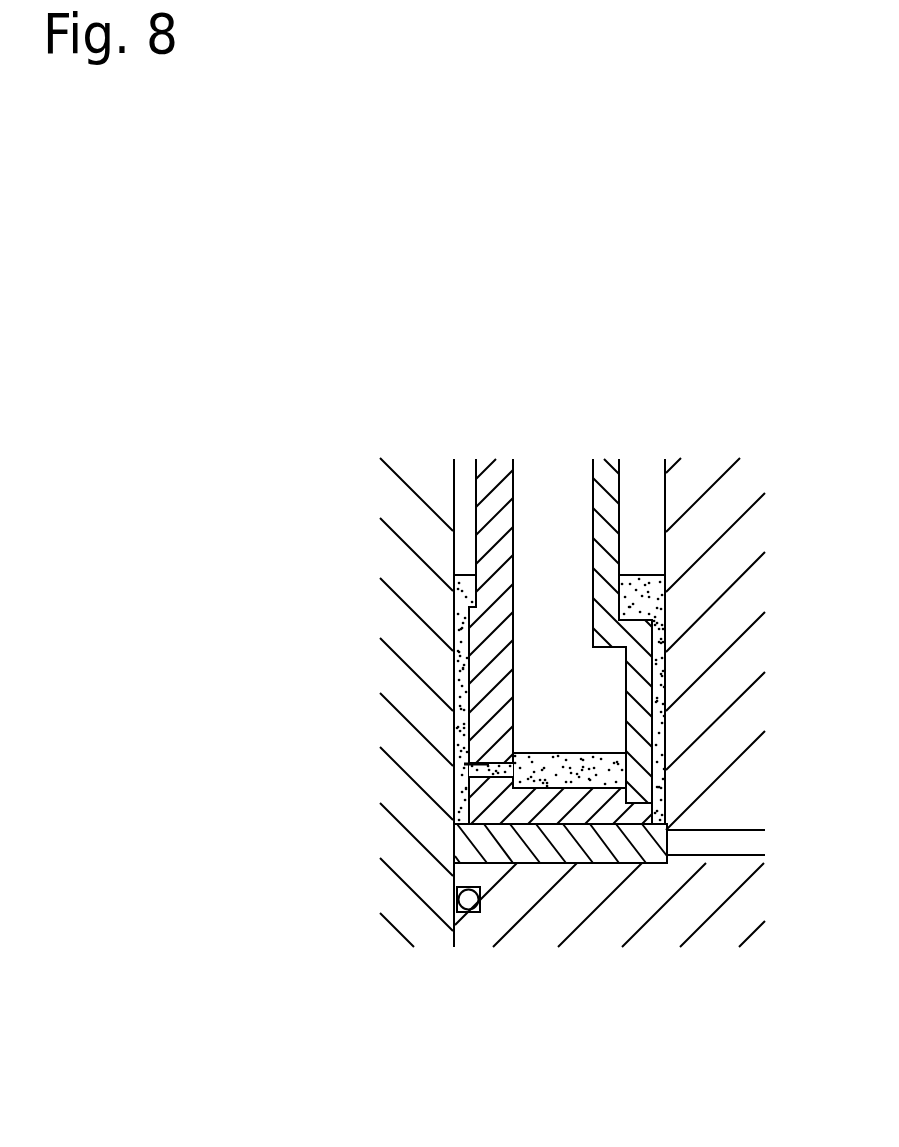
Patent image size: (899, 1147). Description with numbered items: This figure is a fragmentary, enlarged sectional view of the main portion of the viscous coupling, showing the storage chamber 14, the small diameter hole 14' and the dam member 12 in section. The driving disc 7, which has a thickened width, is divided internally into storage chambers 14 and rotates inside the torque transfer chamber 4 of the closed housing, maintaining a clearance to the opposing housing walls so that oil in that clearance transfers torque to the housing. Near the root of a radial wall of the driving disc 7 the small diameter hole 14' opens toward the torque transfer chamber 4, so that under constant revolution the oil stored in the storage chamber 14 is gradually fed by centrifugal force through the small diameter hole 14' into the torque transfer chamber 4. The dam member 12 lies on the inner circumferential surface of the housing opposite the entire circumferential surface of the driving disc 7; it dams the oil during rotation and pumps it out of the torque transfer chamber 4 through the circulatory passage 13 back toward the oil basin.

The torque transfer chamber 4 is at (653, 773).
The driving disc 7 is at (607, 547).
The dam member 12 is at (608, 843).
The circulatory passage 13 is at (706, 845).
The storage chamber 14 is at (670, 606).
The small diameter hole 14' is at (468, 724).